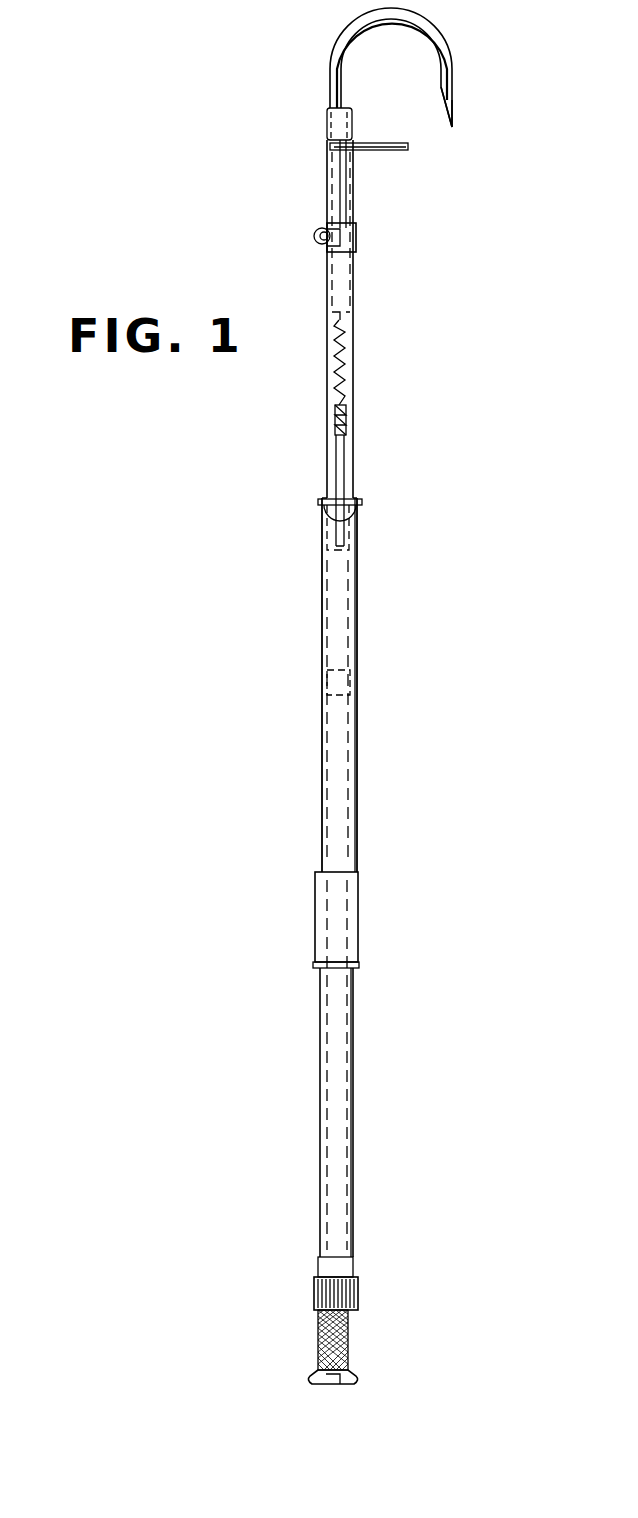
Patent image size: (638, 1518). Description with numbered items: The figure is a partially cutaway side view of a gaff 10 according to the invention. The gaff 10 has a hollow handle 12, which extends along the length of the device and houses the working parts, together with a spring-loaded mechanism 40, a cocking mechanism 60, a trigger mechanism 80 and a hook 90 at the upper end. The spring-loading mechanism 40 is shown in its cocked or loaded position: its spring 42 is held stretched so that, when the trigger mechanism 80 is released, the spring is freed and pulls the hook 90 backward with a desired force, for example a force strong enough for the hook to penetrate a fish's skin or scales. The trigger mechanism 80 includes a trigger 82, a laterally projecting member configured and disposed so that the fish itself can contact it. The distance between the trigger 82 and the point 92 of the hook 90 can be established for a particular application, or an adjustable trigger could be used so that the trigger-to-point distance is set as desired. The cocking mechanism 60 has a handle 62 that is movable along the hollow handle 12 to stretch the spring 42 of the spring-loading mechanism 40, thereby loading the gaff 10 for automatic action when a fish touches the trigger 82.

The gaff 10 is at (358, 626).
The hollow handle 12 is at (362, 964).
The spring-loaded mechanism 40 is at (340, 437).
The spring 42 is at (345, 358).
The cocking mechanism 60 is at (362, 503).
The handle 62 is at (337, 718).
The trigger mechanism 80 is at (357, 224).
The trigger 82 is at (400, 156).
The hook 90 is at (338, 83).
The point 92 is at (450, 112).